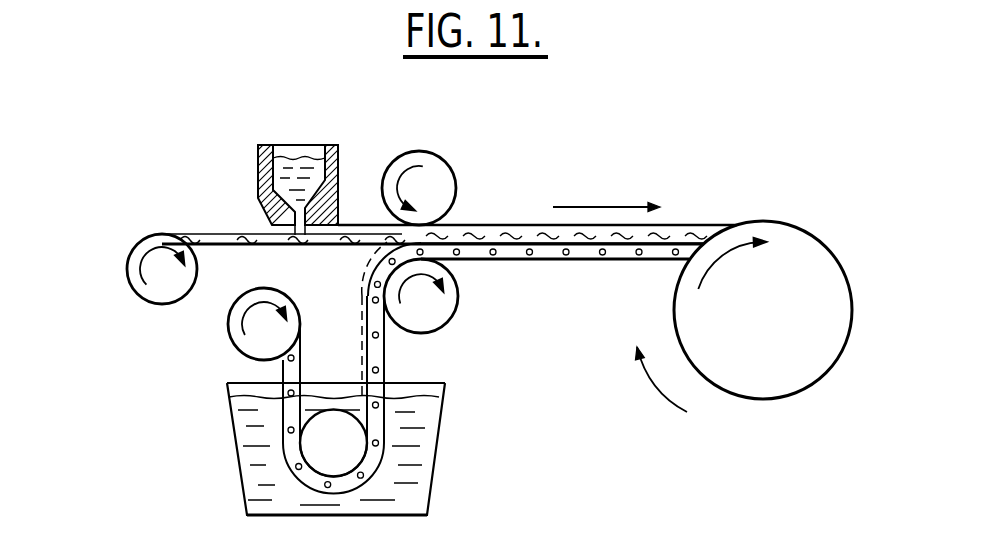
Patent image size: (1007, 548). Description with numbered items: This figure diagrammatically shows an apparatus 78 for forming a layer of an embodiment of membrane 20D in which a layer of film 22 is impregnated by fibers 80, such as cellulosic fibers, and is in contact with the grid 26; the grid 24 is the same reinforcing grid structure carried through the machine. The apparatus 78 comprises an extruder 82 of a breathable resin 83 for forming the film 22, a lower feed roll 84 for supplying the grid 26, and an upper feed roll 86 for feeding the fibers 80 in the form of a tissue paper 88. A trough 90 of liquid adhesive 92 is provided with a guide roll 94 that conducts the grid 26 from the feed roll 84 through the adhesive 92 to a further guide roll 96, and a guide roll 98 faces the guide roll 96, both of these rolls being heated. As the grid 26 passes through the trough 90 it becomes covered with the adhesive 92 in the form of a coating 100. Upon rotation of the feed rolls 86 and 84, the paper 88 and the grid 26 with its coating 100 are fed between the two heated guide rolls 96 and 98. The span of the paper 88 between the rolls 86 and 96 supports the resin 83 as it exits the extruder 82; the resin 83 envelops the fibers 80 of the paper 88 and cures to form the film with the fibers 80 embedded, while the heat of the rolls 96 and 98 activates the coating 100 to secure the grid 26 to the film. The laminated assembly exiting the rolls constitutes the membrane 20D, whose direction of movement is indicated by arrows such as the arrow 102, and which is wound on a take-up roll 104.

The membrane 20D is at (515, 198).
The film 22 is at (370, 224).
The grid 24 is at (368, 335).
The grid 26 is at (283, 363).
The apparatus 78 is at (681, 393).
The fibers 80 is at (504, 248).
The extruder 82 is at (258, 160).
The breathable resin 83 is at (292, 155).
The lower feed roll 84 is at (228, 325).
The upper feed roll 86 is at (126, 271).
The tissue paper 88 is at (190, 233).
The trough 90 is at (237, 441).
The liquid adhesive 92 is at (395, 492).
The guide roll 94 is at (349, 458).
The guide roll 96 is at (458, 299).
The guide roll 98 is at (450, 168).
The coating 100 is at (390, 343).
The arrow 102 is at (597, 207).
The take-up roll 104 is at (789, 334).